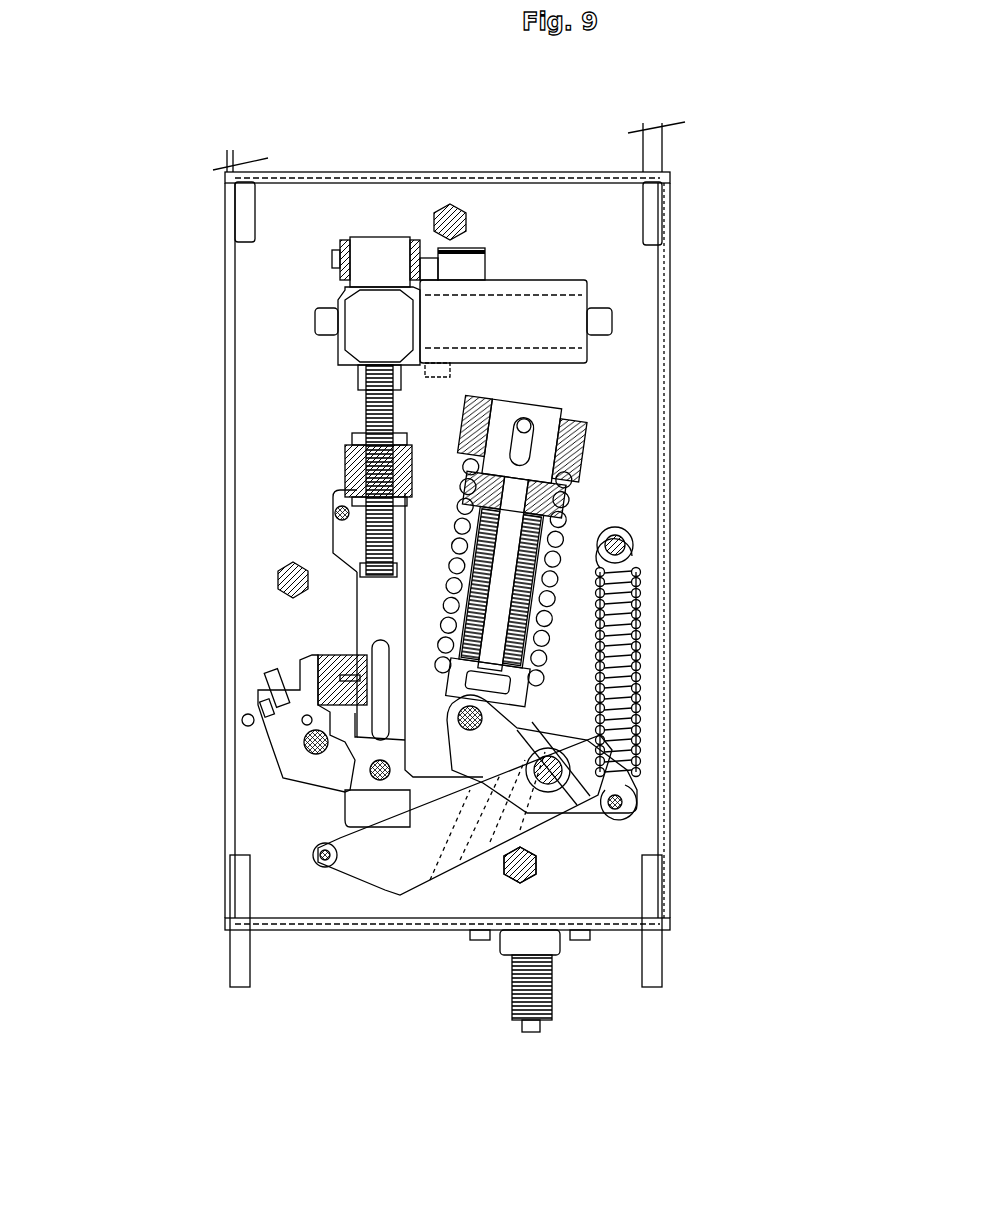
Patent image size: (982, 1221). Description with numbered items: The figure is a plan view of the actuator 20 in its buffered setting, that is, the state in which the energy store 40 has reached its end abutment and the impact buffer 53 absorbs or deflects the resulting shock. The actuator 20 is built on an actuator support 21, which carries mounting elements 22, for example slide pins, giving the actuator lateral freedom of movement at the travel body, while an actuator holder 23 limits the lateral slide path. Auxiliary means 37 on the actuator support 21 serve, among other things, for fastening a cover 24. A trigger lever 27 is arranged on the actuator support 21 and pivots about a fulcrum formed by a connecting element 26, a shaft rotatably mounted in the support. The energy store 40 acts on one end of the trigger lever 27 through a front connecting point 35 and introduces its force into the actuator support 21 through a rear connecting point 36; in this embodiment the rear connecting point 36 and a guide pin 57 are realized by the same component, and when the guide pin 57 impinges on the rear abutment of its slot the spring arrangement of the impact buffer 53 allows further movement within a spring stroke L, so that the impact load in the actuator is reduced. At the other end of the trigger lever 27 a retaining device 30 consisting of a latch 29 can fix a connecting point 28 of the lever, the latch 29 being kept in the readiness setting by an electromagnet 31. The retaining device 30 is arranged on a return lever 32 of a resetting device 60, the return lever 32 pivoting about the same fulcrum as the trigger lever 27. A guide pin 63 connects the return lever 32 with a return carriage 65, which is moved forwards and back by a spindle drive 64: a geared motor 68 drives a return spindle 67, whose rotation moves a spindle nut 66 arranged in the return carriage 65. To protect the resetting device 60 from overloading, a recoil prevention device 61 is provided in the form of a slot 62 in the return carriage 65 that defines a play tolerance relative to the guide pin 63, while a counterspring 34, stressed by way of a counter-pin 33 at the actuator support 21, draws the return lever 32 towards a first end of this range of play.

The actuator 20 is at (165, 113).
The actuator support 21 is at (290, 258).
The mounting elements 22 is at (668, 127).
The actuator holder 23 is at (556, 958).
The cover 24 is at (591, 290).
The connecting element 26 is at (590, 815).
The trigger lever 27 is at (378, 790).
The connecting point 28 is at (310, 855).
The latch 29 is at (290, 745).
The retaining device 30 is at (72, 718).
The electromagnet 31 is at (292, 642).
The return lever 32 is at (577, 815).
The counter-pin 33 is at (640, 550).
The counterspring 34 is at (731, 672).
The front connecting point 35 is at (598, 778).
The rear connecting point 36 is at (645, 511).
The auxiliary means 37 is at (497, 225).
The energy store 40 is at (645, 511).
The impact buffer 53 is at (548, 410).
The guide pin 57 is at (645, 511).
The resetting device 60 is at (446, 684).
The recoil prevention device 61 is at (655, 665).
The slot 62 is at (380, 600).
The guide pin 63 is at (352, 830).
The spindle drive 64 is at (118, 634).
The return carriage 65 is at (342, 585).
The spindle nut 66 is at (357, 462).
The return spindle 67 is at (370, 396).
The geared motor 68 is at (393, 325).
The spring stroke L is at (548, 520).